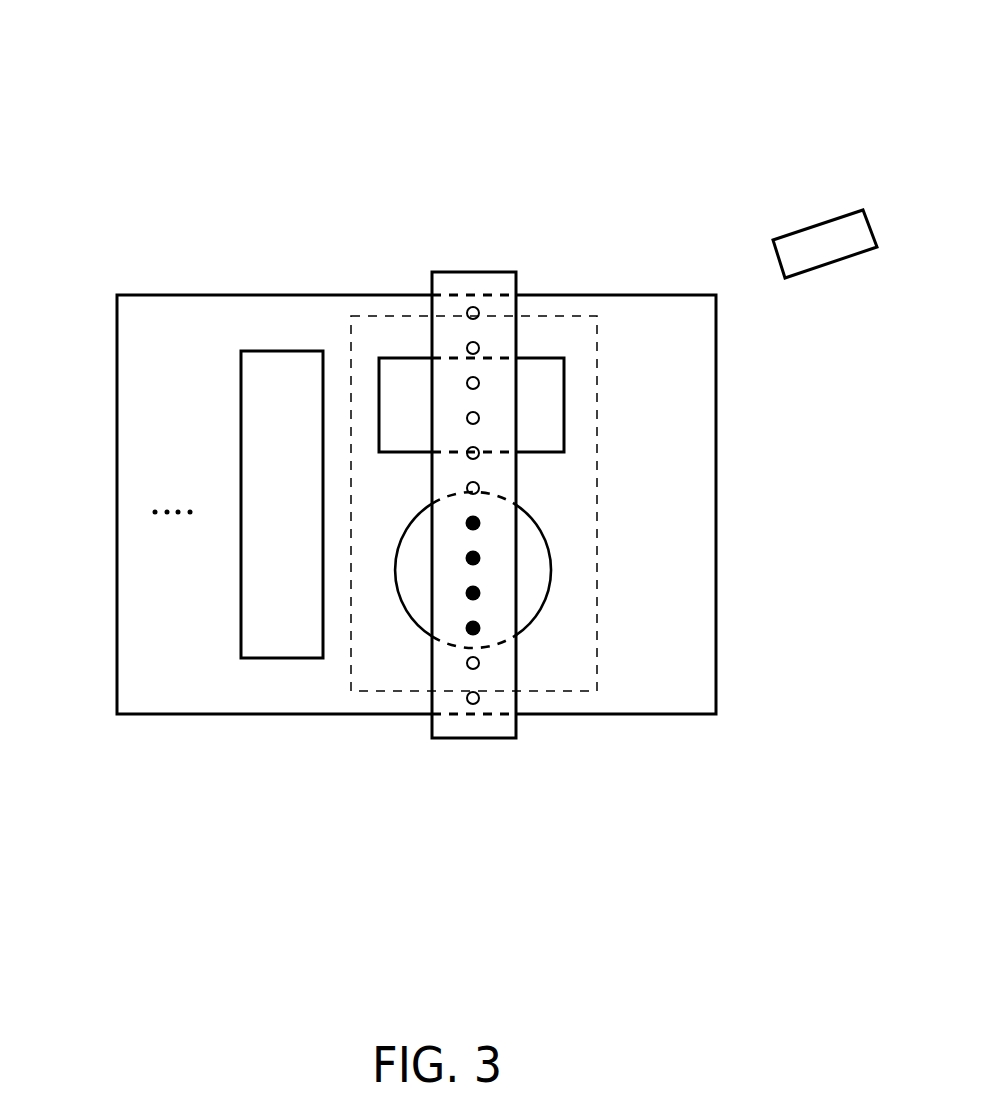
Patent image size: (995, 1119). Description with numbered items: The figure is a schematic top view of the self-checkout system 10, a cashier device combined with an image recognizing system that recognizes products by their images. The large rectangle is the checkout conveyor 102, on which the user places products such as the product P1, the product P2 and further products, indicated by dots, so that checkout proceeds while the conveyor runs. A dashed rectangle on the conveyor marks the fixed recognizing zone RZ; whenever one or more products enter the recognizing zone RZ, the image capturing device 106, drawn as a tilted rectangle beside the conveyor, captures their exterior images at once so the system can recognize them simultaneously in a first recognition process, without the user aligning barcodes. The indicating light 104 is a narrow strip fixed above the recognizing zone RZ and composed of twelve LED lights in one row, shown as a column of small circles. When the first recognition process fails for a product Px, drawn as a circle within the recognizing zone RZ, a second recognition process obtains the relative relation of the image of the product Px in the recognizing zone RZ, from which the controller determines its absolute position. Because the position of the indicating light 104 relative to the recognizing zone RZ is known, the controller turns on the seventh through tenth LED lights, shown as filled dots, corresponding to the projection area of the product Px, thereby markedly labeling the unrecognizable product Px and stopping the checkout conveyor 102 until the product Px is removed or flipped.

The self-checkout system 10 is at (148, 102).
The checkout conveyor 102 is at (145, 418).
The indicating light 104 is at (475, 270).
The image capturing device 106 is at (832, 267).
The product P1 is at (564, 404).
The product P2 is at (277, 455).
The product Px is at (551, 570).
The recognizing zone RZ is at (597, 505).
The light-emitting diode light LED is at (480, 626).